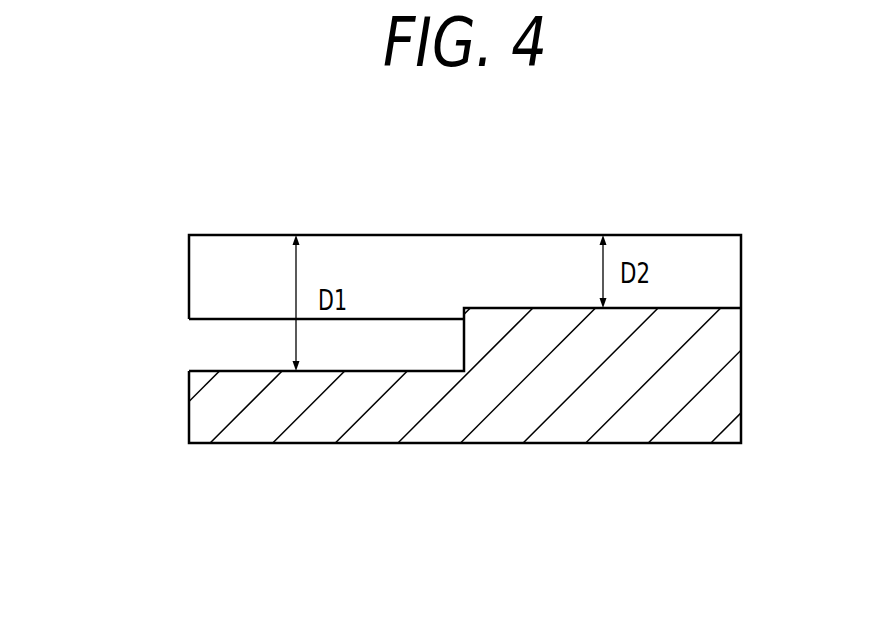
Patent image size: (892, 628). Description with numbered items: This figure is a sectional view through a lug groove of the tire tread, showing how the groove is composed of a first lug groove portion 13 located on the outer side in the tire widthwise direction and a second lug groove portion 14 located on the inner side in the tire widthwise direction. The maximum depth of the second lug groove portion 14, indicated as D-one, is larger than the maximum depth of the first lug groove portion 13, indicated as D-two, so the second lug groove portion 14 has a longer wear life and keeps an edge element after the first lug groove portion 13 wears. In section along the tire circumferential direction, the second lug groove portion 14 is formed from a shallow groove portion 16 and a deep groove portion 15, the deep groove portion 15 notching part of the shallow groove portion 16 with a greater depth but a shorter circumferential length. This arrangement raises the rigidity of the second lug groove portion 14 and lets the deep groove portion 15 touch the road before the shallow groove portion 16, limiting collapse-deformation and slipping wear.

The first lug groove portion 13 is at (708, 308).
The second lug groove portion 14 is at (232, 370).
The deep groove portion 15 is at (375, 432).
The shallow groove portion 16 is at (245, 257).